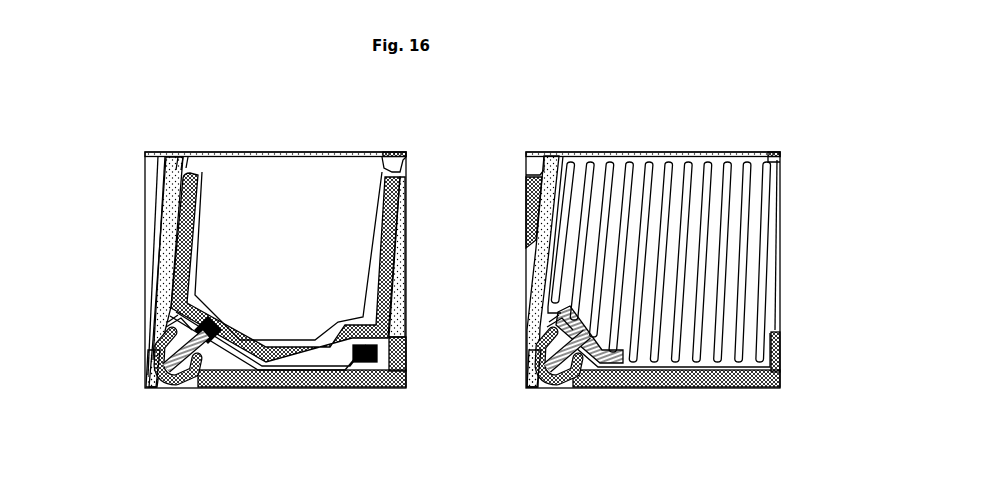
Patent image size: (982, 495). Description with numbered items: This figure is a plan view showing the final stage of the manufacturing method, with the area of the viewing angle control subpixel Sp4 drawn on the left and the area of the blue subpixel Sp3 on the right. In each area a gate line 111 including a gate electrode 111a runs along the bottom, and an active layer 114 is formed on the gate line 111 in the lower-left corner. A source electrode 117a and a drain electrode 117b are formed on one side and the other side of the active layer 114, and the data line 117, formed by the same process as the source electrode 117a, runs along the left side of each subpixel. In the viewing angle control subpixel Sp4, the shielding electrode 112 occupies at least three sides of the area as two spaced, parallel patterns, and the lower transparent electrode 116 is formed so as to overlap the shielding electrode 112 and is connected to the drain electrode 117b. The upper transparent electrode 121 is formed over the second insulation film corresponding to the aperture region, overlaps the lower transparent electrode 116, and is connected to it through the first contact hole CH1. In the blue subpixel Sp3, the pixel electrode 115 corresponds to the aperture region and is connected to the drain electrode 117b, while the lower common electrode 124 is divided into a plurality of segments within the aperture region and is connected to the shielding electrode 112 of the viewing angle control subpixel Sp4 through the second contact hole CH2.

The gate line 111 is at (360, 388).
The gate electrode 111a is at (167, 340).
The shielding electrode 112 is at (180, 222).
The active layer 114 is at (170, 386).
The pixel electrode 115 is at (570, 262).
The lower transparent electrode 116 is at (172, 260).
The data line 117 is at (160, 303).
The source electrode 117a is at (152, 368).
The drain electrode 117b is at (195, 386).
The upper transparent electrode 121 is at (175, 162).
The lower common electrode 124 is at (400, 165).
The first contact hole CH1 is at (205, 318).
The second contact hole CH2 is at (360, 337).
The blue subpixel Sp3 is at (668, 140).
The viewing angle control subpixel Sp4 is at (274, 140).